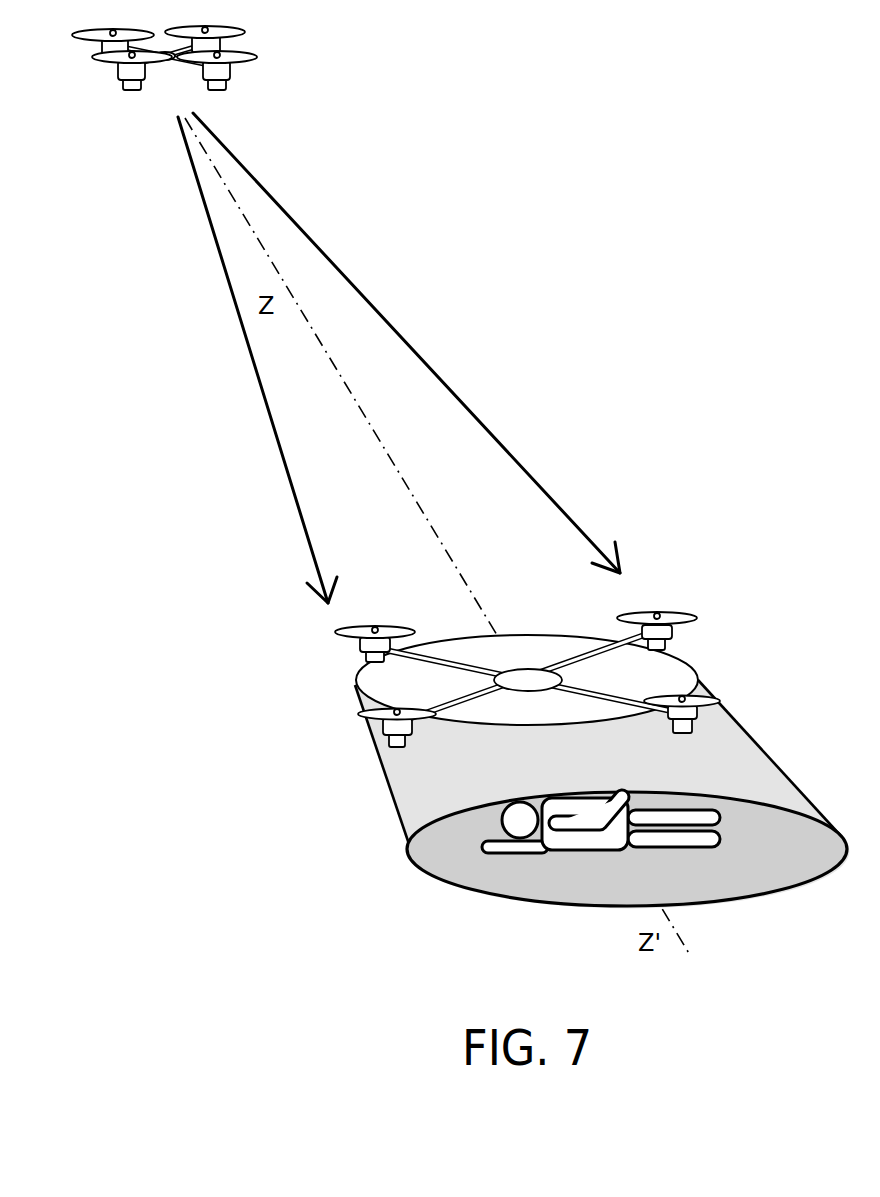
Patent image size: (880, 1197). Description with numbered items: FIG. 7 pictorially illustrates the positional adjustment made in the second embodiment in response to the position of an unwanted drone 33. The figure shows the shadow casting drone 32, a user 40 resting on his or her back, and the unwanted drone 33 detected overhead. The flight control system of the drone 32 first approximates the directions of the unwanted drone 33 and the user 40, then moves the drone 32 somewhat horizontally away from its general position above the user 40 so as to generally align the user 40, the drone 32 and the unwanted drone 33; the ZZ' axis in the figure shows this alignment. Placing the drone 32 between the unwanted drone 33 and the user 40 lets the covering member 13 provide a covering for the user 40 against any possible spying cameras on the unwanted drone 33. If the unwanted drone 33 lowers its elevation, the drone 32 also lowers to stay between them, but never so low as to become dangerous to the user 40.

The covering member 13 is at (527, 630).
The shadow casting drone 32 is at (519, 722).
The unwanted drone 33 is at (247, 58).
The user 40 is at (573, 876).